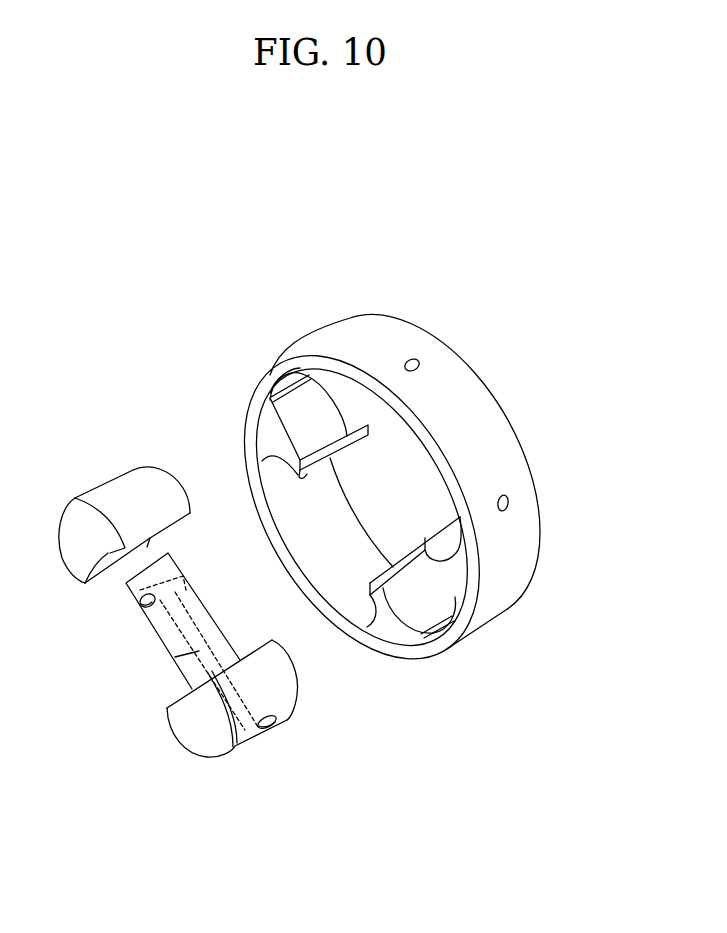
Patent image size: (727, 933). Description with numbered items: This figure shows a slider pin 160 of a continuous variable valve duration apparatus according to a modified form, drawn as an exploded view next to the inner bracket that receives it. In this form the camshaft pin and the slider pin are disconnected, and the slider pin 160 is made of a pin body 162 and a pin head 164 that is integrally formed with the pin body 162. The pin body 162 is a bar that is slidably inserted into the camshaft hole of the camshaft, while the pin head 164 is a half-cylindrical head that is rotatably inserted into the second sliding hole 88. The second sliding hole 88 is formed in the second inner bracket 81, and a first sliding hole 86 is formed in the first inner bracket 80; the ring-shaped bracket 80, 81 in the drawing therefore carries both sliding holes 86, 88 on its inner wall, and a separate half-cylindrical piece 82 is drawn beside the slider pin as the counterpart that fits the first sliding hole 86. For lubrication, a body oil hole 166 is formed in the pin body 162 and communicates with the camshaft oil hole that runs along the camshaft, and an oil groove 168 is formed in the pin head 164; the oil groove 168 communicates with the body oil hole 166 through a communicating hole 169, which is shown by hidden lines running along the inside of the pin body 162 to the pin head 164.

The first inner bracket 80 is at (368, 431).
The second inner bracket 81 is at (417, 322).
The fixing protrusion 82 is at (143, 493).
The first sliding hole 86 is at (303, 421).
The second sliding hole 88 is at (423, 603).
The slider pin 160 is at (224, 691).
The pin body 162 is at (157, 610).
The pin head 164 is at (276, 745).
The body oil hole 166 is at (143, 602).
The oil groove 168 is at (267, 731).
The communicating hole 169 is at (178, 670).